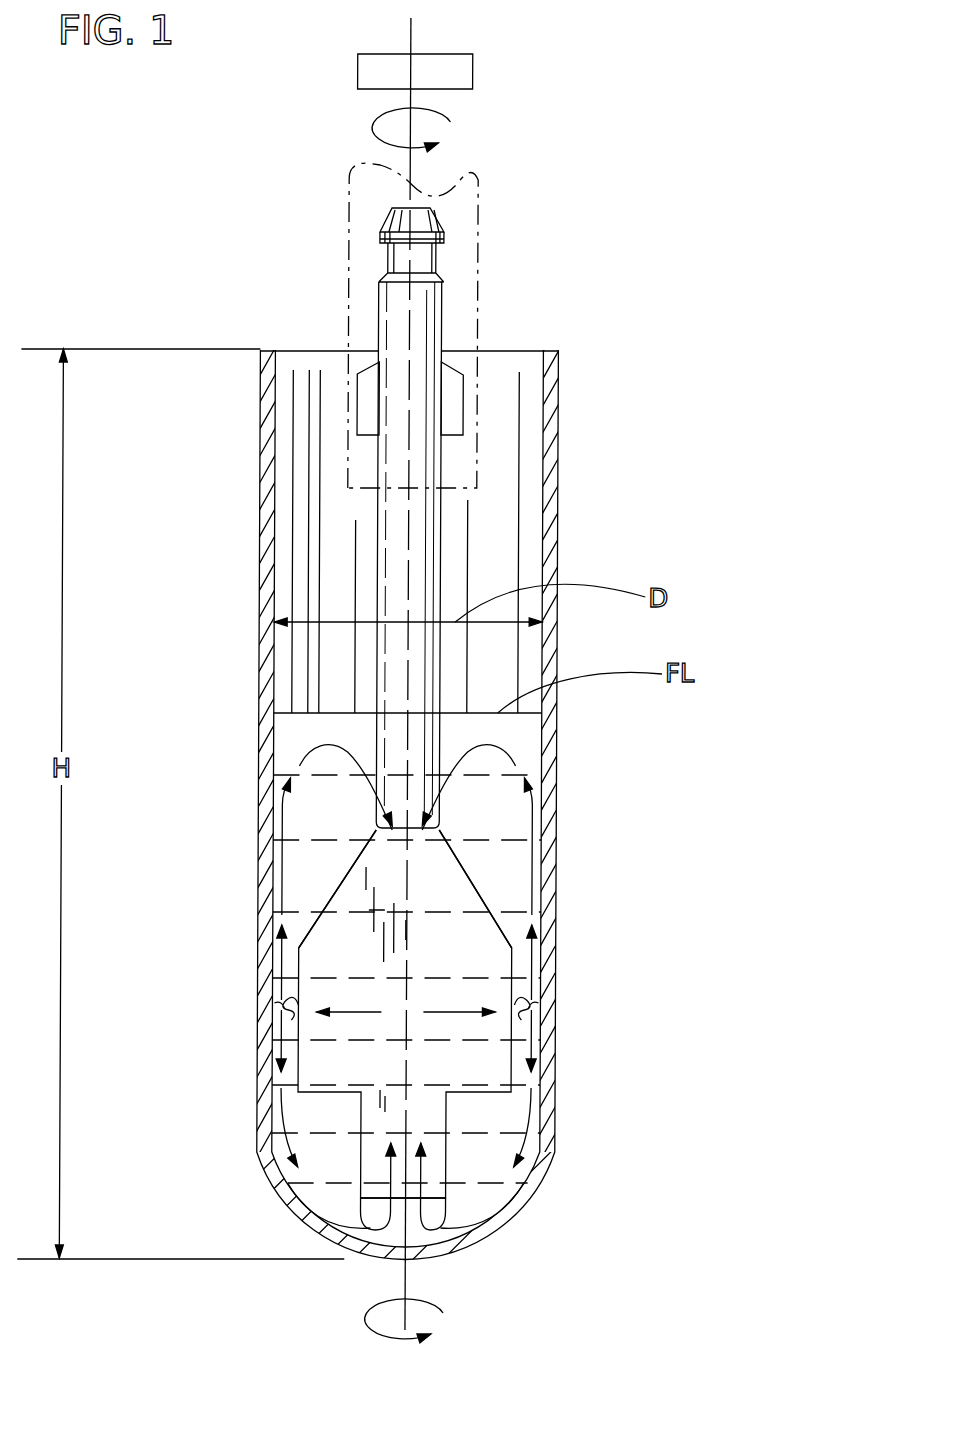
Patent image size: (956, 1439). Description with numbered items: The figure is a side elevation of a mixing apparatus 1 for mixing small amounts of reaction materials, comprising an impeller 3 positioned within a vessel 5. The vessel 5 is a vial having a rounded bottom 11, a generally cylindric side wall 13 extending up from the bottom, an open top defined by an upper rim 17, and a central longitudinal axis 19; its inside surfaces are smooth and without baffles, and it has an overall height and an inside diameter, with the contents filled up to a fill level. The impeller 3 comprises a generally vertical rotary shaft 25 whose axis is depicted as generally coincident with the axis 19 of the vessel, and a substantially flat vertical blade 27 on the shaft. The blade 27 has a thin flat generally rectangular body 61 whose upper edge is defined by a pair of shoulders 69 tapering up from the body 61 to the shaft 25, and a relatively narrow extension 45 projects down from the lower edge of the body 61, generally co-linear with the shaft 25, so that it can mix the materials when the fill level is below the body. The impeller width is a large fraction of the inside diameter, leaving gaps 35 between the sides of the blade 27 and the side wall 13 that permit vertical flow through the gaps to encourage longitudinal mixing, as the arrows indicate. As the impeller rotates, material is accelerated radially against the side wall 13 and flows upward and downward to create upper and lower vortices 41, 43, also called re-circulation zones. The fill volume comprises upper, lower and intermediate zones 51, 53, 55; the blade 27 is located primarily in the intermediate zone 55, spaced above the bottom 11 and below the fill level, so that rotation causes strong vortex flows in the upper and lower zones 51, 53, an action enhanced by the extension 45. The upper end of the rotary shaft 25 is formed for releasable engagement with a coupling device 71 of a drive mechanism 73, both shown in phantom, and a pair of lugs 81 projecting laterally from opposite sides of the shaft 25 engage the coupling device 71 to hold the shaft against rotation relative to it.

The mixing apparatus 1 is at (232, 228).
The impeller 3 is at (421, 518).
The vessel 5 is at (250, 512).
The rounded bottom 11 is at (480, 1243).
The cylindric side wall 13 is at (558, 433).
The upper rim 17 is at (558, 352).
The central longitudinal axis 19 is at (410, 33).
The rotary shaft 25 is at (373, 645).
The blade 27 is at (419, 1027).
The gaps 35 is at (283, 1005).
The upper vortex 41 is at (525, 757).
The lower vortex 43 is at (530, 1152).
The extension 45 is at (470, 1232).
The upper zone 51 is at (293, 728).
The lower zone 53 is at (347, 1202).
The intermediate zone 55 is at (287, 960).
The body 61 is at (495, 1073).
The shoulders 69 is at (352, 882).
The coupling device 71 is at (403, 178).
The drive mechanism 73 is at (470, 70).
The lugs 81 is at (365, 402).